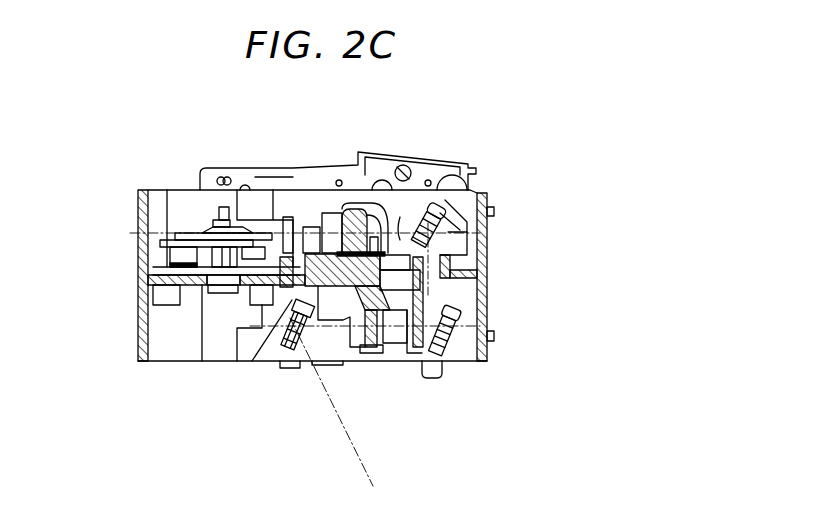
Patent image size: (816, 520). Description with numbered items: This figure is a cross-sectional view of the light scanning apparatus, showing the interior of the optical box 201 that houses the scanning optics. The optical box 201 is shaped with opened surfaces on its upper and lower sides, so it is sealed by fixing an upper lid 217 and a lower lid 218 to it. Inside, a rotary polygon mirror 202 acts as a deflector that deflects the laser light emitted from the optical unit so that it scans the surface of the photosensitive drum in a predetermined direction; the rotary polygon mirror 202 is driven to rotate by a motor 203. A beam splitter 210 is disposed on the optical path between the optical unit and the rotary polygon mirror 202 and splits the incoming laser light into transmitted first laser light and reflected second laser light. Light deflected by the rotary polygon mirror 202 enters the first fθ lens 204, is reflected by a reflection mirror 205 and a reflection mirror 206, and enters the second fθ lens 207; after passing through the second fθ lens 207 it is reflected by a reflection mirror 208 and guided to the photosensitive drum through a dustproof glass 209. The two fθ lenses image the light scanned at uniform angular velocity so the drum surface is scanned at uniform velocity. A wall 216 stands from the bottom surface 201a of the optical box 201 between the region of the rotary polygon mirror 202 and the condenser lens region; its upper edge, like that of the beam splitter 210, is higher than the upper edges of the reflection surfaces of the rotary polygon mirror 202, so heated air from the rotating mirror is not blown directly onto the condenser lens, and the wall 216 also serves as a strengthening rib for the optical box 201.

The optical box 201 is at (178, 238).
The bottom surface 201a is at (184, 287).
The rotary polygon mirror 202 is at (205, 225).
The motor 203 is at (203, 250).
The first fθ lens 204 is at (372, 207).
The reflection mirror 205 is at (443, 198).
The reflection mirror 206 is at (453, 340).
The second fθ lens 207 is at (377, 343).
The reflection mirror 208 is at (278, 362).
The dustproof glass 209 is at (338, 345).
The beam splitter 210 is at (290, 218).
The wall 216 is at (187, 197).
The upper lid 217 is at (292, 187).
The lower lid 218 is at (224, 362).